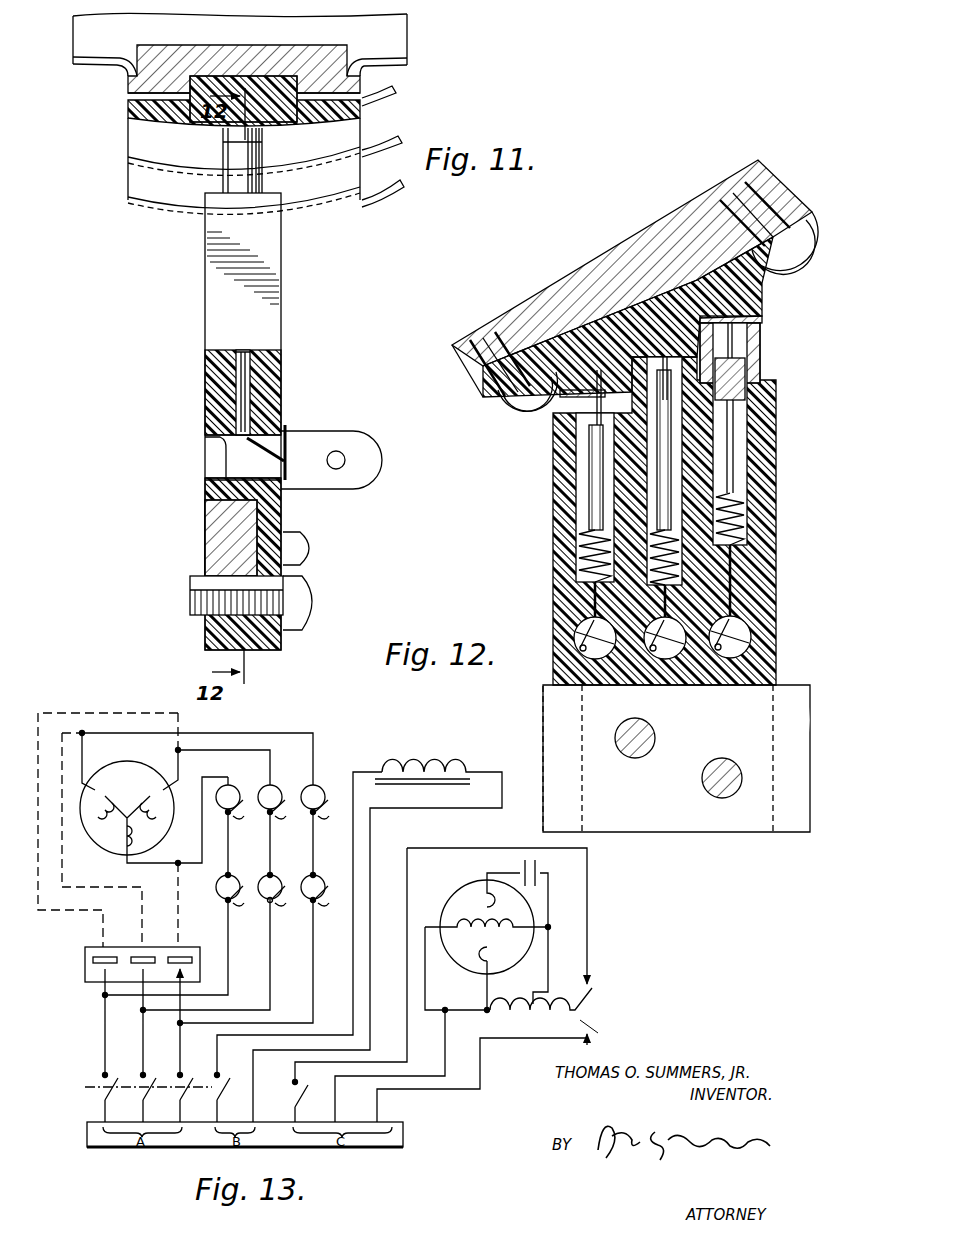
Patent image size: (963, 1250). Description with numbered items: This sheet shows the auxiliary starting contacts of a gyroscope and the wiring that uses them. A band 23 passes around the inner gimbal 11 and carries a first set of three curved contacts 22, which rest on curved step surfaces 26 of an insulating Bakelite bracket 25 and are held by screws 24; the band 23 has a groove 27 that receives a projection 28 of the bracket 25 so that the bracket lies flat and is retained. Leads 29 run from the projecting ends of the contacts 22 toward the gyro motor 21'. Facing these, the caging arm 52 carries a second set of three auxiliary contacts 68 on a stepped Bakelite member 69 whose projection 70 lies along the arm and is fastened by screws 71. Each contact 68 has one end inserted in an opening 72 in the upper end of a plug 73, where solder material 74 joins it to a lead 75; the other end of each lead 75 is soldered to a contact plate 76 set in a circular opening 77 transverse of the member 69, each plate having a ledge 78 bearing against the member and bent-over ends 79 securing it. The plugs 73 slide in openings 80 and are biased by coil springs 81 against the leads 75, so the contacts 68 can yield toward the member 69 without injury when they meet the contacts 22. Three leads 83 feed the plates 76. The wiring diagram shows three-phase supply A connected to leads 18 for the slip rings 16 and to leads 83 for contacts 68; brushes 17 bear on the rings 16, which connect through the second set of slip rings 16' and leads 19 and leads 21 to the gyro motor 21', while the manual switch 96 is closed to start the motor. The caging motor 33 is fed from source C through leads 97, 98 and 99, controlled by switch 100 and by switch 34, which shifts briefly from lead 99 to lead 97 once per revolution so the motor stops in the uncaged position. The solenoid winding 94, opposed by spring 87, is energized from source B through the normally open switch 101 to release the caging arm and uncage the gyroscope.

In FIG. 11, the inner gimbal 11 is at (402, 25).
In FIG. 13, the slip rings 16 is at (280, 786).
In FIG. 13, the second set of slip rings 16' is at (281, 878).
In FIG. 13, the brushes 17 is at (288, 815).
In FIG. 13, the leads 18 is at (229, 845).
In FIG. 13, the leads 19 is at (228, 760).
In FIG. 13, the leads 21 is at (154, 798).
In FIG. 13, the gyro motor 21' is at (154, 751).
In FIG. 11, the contacts 22 is at (398, 93).
In FIG. 12, the contacts 22 is at (762, 300).
In FIG. 13, the contacts 22 is at (172, 957).
In FIG. 11, the band 23 is at (300, 56).
In FIG. 12, the band 23 is at (708, 222).
In FIG. 12, the screws 24 is at (780, 250).
In FIG. 11, the bracket 25 is at (356, 104).
In FIG. 12, the bracket 25 is at (478, 400).
In FIG. 13, the bracket 25 is at (85, 975).
In FIG. 11, the step surfaces 26 is at (320, 172).
In FIG. 12, the step surfaces 26 is at (764, 322).
In FIG. 11, the groove 27 is at (243, 98).
In FIG. 11, the projection 28 is at (290, 80).
In FIG. 13, the leads 29 is at (178, 878).
In FIG. 13, the caging motor 33 is at (458, 898).
In FIG. 13, the switch 34 is at (590, 1006).
In FIG. 11, the caging arm 52 is at (206, 541).
In FIG. 12, the caging arm 52 is at (750, 834).
In FIG. 11, the auxiliary contacts 68 is at (262, 141).
In FIG. 12, the auxiliary contacts 68 is at (748, 336).
In FIG. 13, the auxiliary contacts 68 is at (130, 968).
In FIG. 11, the stepped Bakelite member 69 is at (284, 376).
In FIG. 12, the stepped Bakelite member 69 is at (778, 594).
In FIG. 11, the projection 70 is at (283, 516).
In FIG. 12, the projection 70 is at (582, 716).
In FIG. 11, the screws 71 is at (313, 550).
In FIG. 12, the screws 71 is at (722, 768).
In FIG. 11, the opening 72 is at (243, 351).
In FIG. 12, the opening 72 is at (750, 372).
In FIG. 11, the plug 73 is at (226, 152).
In FIG. 12, the plug 73 is at (748, 433).
In FIG. 12, the solder material 74 is at (746, 390).
In FIG. 11, the leads 75 is at (238, 392).
In FIG. 12, the leads 75 is at (588, 470).
In FIG. 11, the contact plate 76 is at (332, 472).
In FIG. 12, the contact plate 76 is at (574, 656).
In FIG. 11, the circular opening 77 is at (206, 447).
In FIG. 12, the circular opening 77 is at (576, 640).
In FIG. 11, the ledge 78 is at (266, 447).
In FIG. 11, the ends 79 is at (206, 482).
In FIG. 12, the openings 80 is at (750, 448).
In FIG. 12, the coil springs 81 is at (750, 518).
In FIG. 13, the leads 83 is at (204, 984).
In FIG. 13, the spring 87 is at (452, 791).
In FIG. 13, the solenoid winding 94 is at (432, 785).
In FIG. 13, the manual switch 96 is at (86, 1087).
In FIG. 13, the lead 97 is at (408, 1040).
In FIG. 13, the lead 98 is at (446, 1050).
In FIG. 13, the lead 99 is at (481, 1070).
In FIG. 13, the switch 100 is at (305, 1092).
In FIG. 13, the manual switch 101 is at (226, 1084).